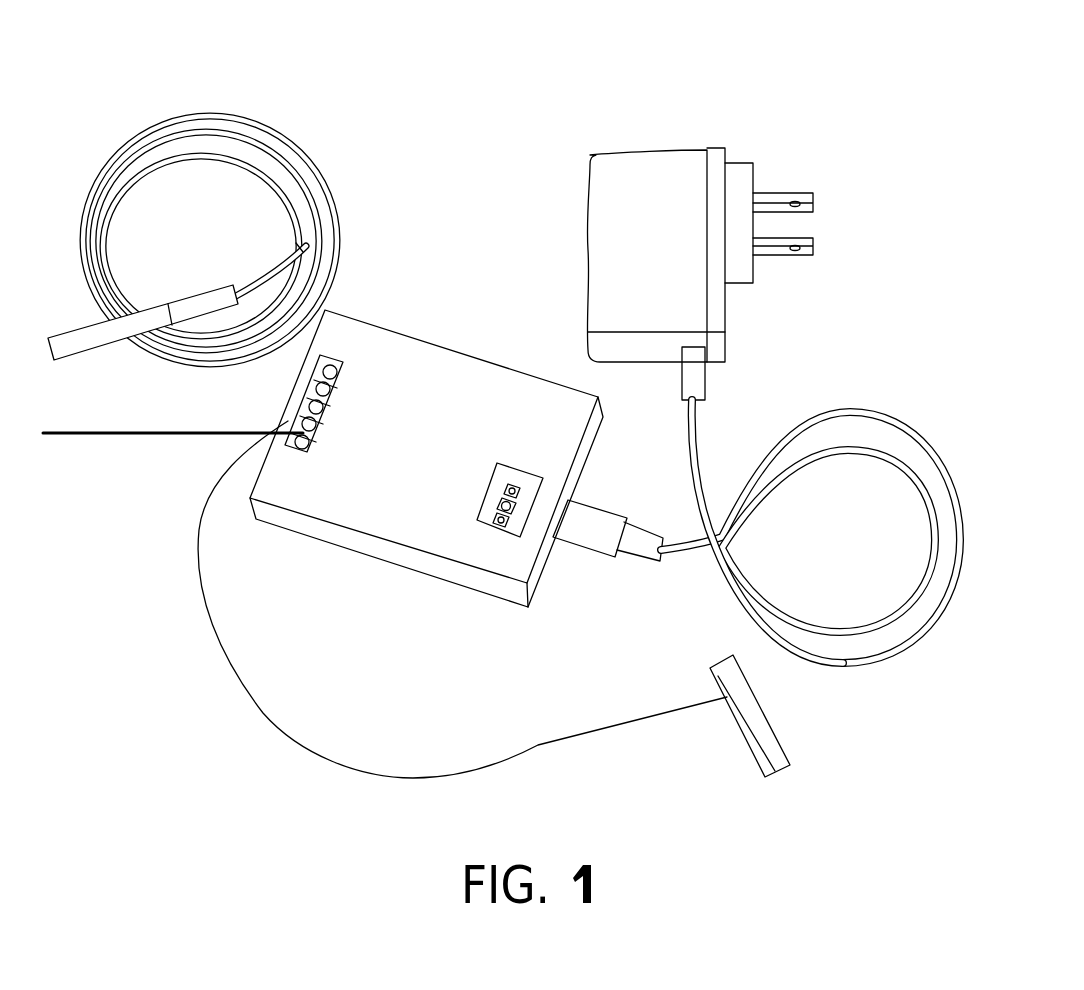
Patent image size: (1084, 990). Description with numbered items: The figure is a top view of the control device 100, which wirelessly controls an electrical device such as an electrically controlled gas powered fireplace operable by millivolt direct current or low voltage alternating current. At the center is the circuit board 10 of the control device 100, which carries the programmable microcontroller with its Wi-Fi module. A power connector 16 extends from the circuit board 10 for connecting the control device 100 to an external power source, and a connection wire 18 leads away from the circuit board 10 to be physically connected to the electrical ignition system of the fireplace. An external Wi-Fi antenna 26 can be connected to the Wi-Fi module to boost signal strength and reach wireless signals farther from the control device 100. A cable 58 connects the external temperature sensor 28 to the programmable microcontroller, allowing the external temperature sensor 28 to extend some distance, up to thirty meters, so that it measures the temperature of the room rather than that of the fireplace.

The control device 100 is at (498, 112).
The cable 58 is at (243, 150).
The external temperature sensor 28 is at (97, 342).
The connection wire 18 is at (120, 437).
The circuit board 10 is at (513, 477).
The power connector 16 is at (588, 536).
The external Wi-Fi antenna 26 is at (763, 720).